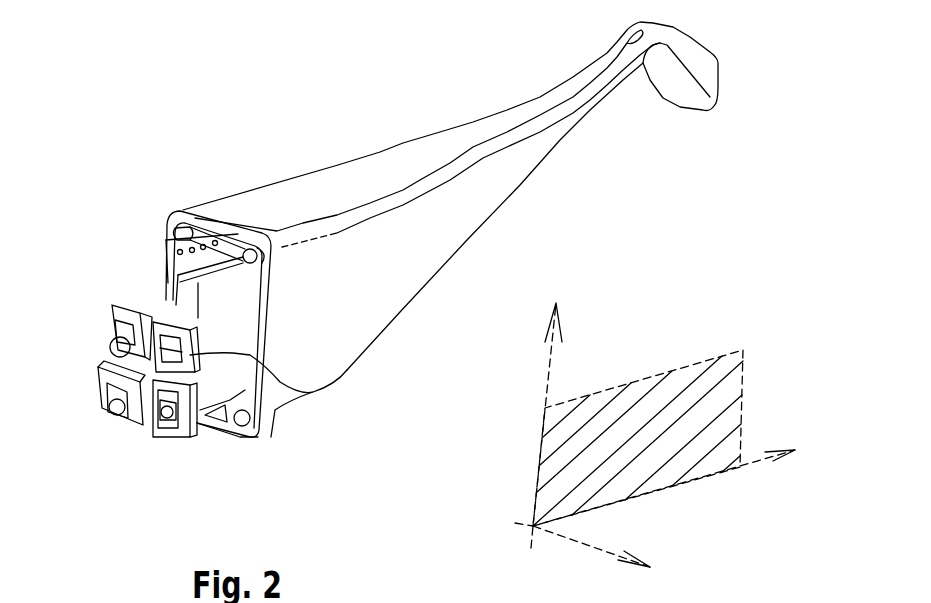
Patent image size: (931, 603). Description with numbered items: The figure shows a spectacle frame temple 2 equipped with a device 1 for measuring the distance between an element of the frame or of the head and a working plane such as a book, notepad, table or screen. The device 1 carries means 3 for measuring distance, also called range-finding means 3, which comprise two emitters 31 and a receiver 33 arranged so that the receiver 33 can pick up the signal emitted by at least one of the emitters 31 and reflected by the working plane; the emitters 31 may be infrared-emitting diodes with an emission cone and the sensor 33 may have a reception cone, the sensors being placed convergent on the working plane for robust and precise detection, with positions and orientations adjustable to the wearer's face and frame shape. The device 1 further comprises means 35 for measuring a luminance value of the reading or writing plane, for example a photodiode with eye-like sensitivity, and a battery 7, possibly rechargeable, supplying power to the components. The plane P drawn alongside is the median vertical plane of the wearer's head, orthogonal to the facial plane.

The device 1 is at (88, 409).
The temple 2 is at (512, 165).
The means for measuring distance 3 is at (128, 312).
The battery 7 is at (220, 285).
The emitters 31 is at (118, 413).
The receiver 33 is at (110, 347).
The means for measuring a luminance value 35 is at (310, 395).
The plane P is at (743, 367).